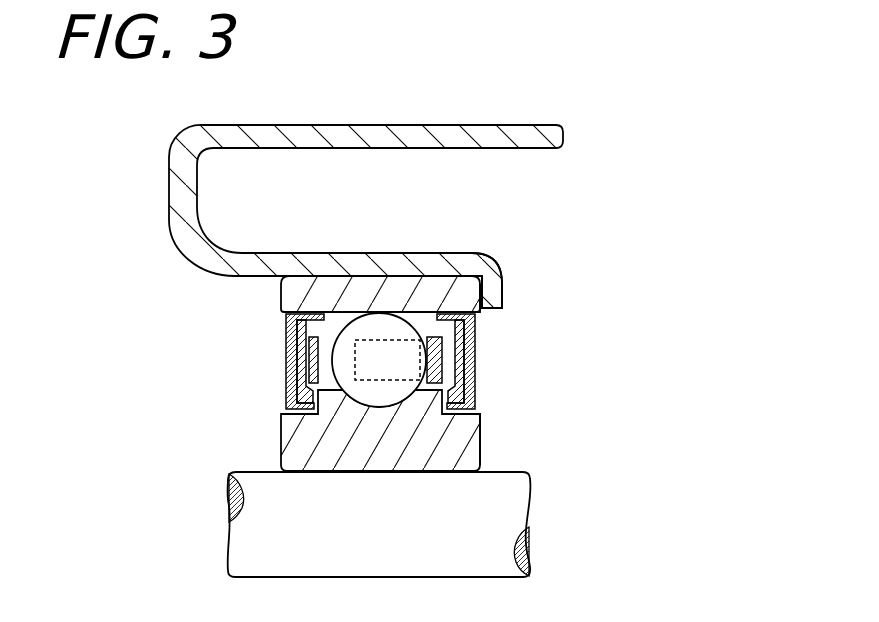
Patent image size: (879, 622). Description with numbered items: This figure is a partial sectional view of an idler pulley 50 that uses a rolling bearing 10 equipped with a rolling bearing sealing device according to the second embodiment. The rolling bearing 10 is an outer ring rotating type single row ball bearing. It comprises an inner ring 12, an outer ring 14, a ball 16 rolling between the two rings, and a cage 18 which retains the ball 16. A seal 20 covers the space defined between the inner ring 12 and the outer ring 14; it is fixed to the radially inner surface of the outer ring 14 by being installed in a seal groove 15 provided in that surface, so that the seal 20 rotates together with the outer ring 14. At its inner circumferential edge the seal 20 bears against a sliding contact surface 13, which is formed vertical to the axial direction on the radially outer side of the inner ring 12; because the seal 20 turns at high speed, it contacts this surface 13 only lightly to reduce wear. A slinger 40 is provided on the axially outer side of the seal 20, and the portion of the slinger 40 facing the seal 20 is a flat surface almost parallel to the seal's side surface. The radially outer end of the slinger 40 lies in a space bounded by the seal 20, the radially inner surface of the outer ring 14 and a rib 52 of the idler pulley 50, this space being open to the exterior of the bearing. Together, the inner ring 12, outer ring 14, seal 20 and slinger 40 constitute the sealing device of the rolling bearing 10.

The rolling bearing 10 is at (265, 387).
The inner ring 12 is at (297, 440).
The sliding contact surface 13 is at (480, 442).
The outer ring 14 is at (305, 293).
The seal groove 15 is at (475, 325).
The ball 16 is at (373, 392).
The cage 18 is at (428, 387).
The seal 20 is at (300, 340).
The slinger 40 is at (290, 362).
The idler pulley 50 is at (331, 124).
The rib 52 is at (491, 289).